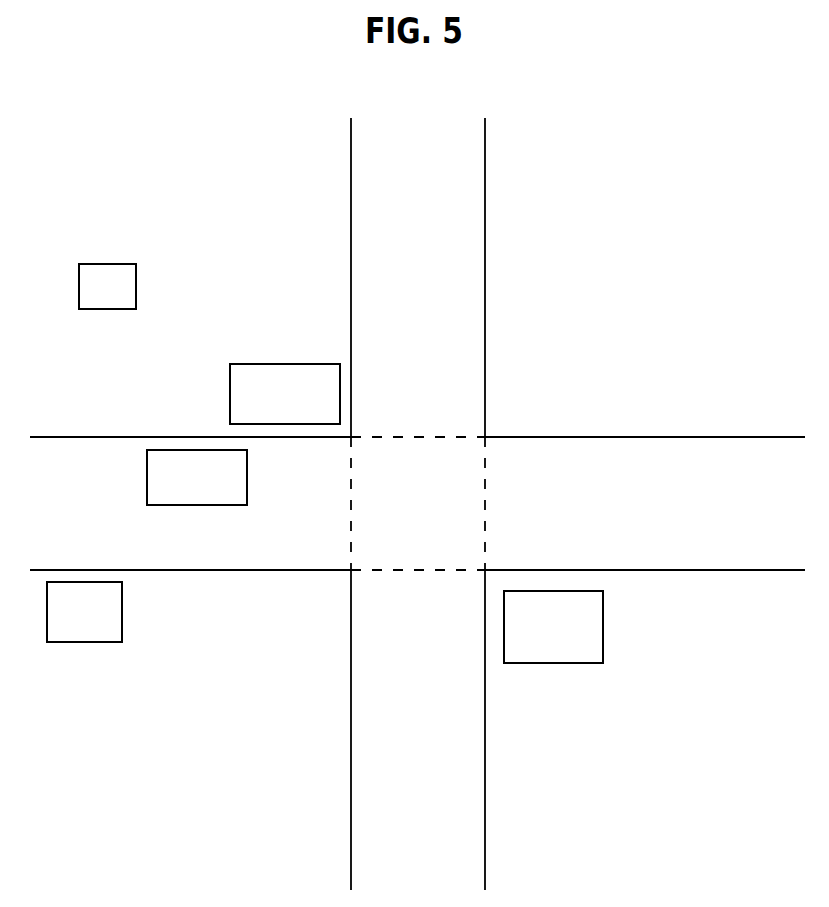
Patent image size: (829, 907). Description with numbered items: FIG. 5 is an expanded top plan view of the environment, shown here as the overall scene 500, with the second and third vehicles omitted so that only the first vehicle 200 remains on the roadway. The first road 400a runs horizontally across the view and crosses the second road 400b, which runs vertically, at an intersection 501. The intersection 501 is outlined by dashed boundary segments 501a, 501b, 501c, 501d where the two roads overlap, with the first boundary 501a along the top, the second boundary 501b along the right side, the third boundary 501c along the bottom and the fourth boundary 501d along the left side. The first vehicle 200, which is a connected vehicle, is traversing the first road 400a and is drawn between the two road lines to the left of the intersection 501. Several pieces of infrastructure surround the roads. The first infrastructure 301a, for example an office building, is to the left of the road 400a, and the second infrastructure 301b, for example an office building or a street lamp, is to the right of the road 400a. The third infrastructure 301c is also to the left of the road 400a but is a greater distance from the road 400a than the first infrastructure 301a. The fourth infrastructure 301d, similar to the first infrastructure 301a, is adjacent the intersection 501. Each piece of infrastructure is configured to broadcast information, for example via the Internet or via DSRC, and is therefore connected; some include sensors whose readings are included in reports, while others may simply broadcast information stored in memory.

The intersection scene 500 is at (735, 138).
The first road 400a is at (67, 435).
The second road 400b is at (485, 187).
The intersection 501 is at (505, 455).
The first boundary of intersection area 501a is at (397, 433).
The second boundary of intersection area 501b is at (487, 520).
The third boundary of intersection area 501c is at (398, 577).
The fourth boundary of intersection area 501d is at (345, 522).
The first vehicle 200 is at (147, 477).
The first infrastructure 301a is at (246, 363).
The second infrastructure 301b is at (122, 620).
The third infrastructure 301c is at (99, 262).
The fourth infrastructure 301d is at (603, 650).